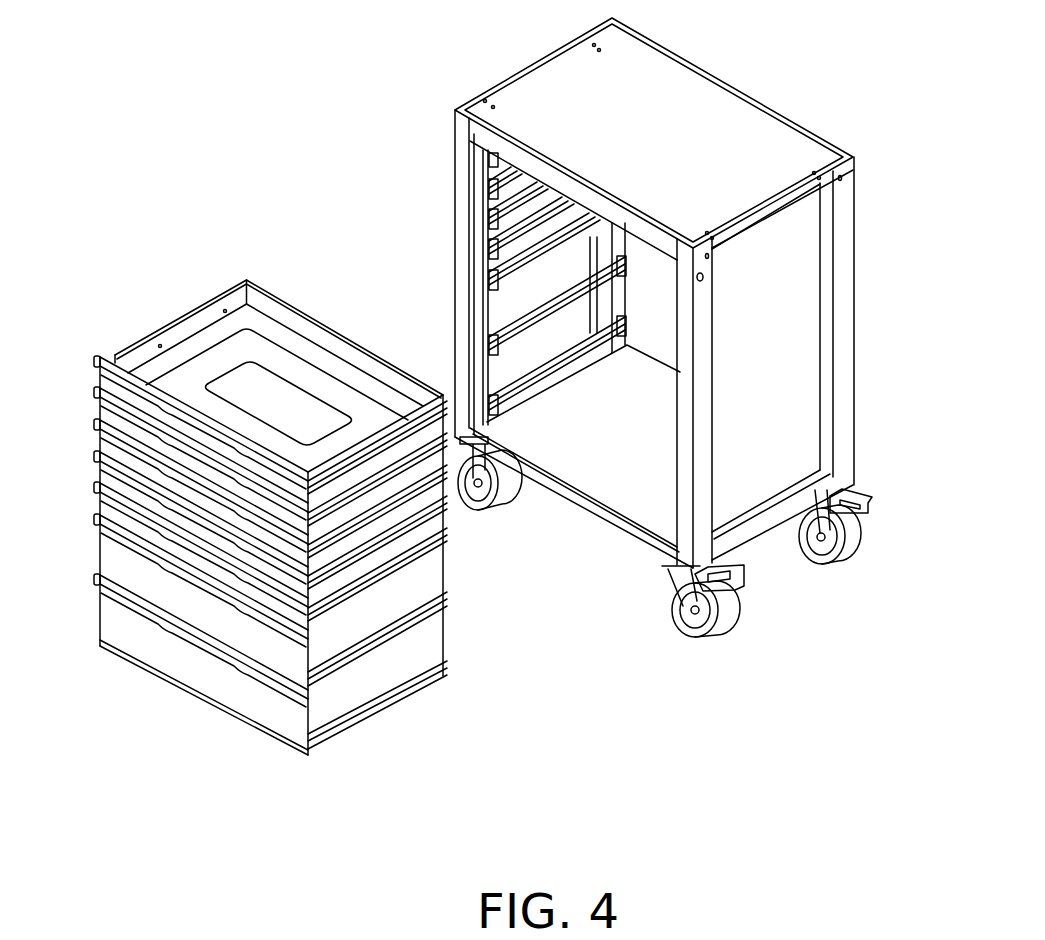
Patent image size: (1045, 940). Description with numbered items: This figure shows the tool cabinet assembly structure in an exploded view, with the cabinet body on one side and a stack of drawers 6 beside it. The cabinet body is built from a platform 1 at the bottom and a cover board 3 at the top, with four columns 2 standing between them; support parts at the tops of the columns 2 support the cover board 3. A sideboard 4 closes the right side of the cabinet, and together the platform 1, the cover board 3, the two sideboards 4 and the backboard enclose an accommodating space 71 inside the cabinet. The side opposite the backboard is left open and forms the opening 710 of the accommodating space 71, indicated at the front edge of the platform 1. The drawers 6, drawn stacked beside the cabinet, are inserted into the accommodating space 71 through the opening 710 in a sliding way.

The platform 1 is at (768, 521).
The column 2 is at (458, 233).
The cover board 3 is at (715, 105).
The sideboard 4 is at (777, 342).
The drawer 6 is at (198, 663).
The accommodating space 71 is at (622, 393).
The opening 710 is at (656, 510).